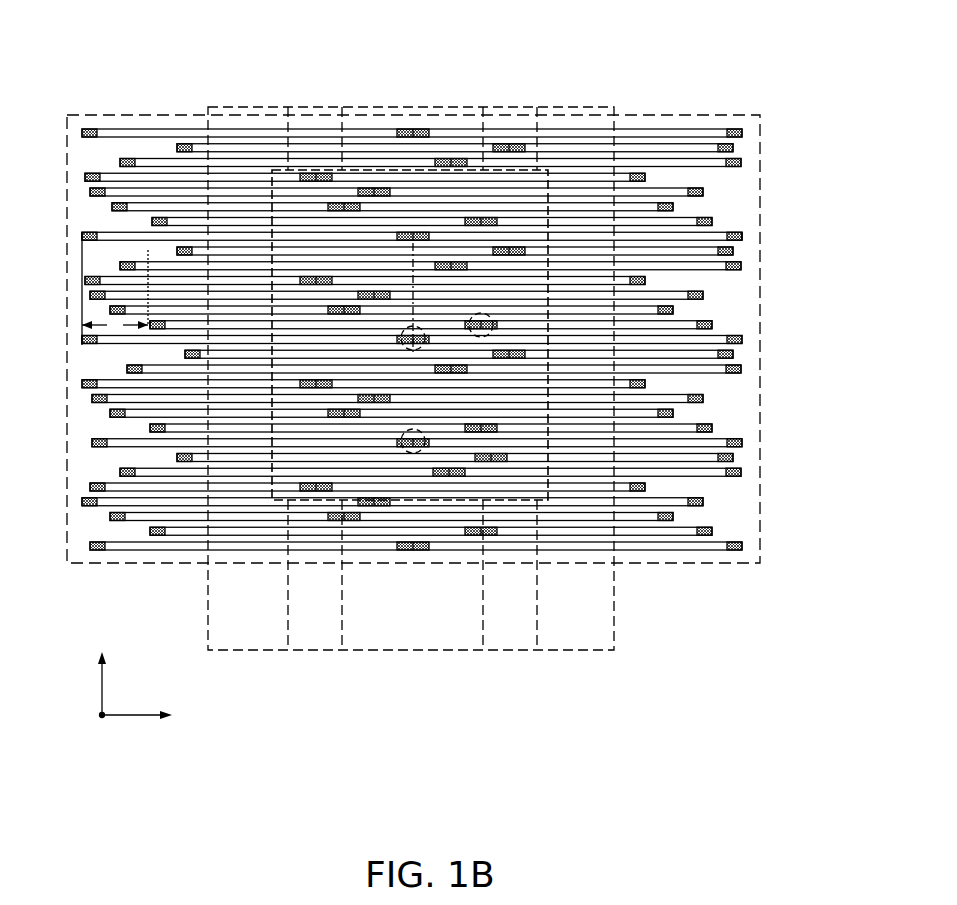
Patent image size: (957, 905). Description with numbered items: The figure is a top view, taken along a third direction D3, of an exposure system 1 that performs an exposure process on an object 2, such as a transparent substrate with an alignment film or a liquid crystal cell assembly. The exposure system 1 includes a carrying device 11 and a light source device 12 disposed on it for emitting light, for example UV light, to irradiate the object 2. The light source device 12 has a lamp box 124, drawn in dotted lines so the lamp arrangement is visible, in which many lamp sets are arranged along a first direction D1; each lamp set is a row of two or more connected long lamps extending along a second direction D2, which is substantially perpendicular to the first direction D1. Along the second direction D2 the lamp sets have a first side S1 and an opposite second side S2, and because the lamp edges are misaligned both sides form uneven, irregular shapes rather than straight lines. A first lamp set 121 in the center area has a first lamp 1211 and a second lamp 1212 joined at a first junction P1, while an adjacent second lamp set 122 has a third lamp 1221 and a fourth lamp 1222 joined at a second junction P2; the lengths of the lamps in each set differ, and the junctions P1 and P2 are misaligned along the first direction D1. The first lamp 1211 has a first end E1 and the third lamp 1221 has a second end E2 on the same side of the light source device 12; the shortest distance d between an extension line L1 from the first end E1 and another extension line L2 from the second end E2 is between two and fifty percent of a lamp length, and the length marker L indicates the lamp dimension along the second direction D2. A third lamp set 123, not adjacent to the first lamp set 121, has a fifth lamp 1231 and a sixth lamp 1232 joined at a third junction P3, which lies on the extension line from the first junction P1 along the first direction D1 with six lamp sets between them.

The exposure system 1 is at (160, 52).
The carrying device 11 is at (583, 103).
The light source device 12 is at (146, 125).
The lamp box 124 is at (700, 113).
The object 2 is at (369, 170).
The first lamp set 121 is at (419, 343).
The first lamp 1211 is at (100, 340).
The second lamp 1212 is at (713, 339).
The second lamp set 122 is at (459, 323).
The third lamp 1221 is at (180, 326).
The fourth lamp 1222 is at (693, 327).
The third lamp set 123 is at (416, 426).
The fifth lamp 1231 is at (122, 441).
The sixth lamp 1232 is at (737, 440).
The first side S1 is at (79, 232).
The second side S2 is at (746, 233).
The extension line L1 is at (80, 262).
The extension line L2 is at (146, 258).
The center line L is at (412, 253).
The shortest distance d is at (115, 324).
The first end E1 is at (82, 338).
The second end E2 is at (150, 326).
The first junction P1 is at (413, 327).
The second junction P2 is at (481, 315).
The third junction P3 is at (413, 430).
The first direction D1 is at (108, 671).
The second direction D2 is at (153, 714).
The third direction D3 is at (90, 727).